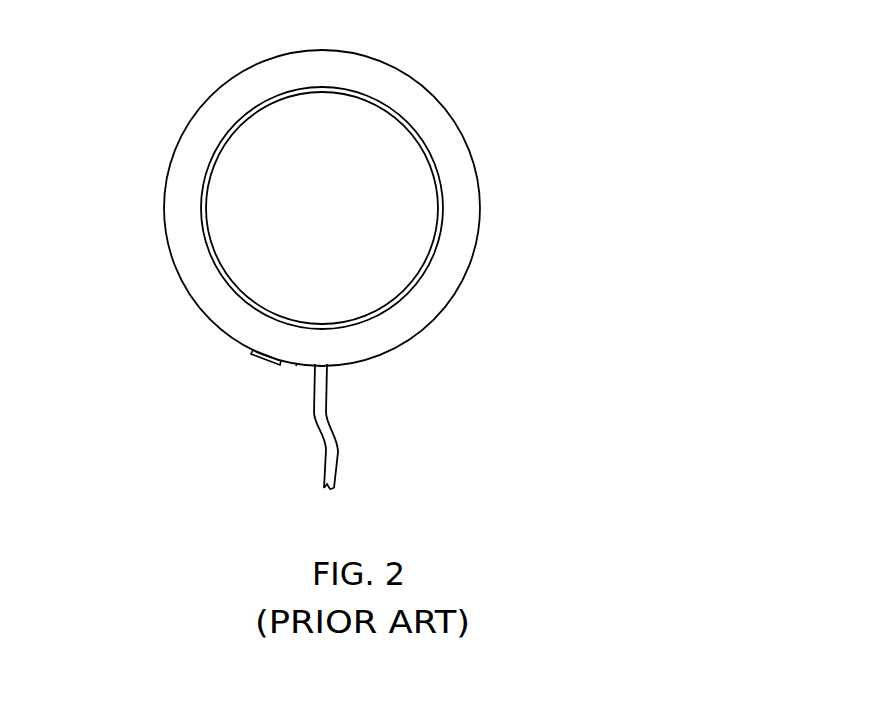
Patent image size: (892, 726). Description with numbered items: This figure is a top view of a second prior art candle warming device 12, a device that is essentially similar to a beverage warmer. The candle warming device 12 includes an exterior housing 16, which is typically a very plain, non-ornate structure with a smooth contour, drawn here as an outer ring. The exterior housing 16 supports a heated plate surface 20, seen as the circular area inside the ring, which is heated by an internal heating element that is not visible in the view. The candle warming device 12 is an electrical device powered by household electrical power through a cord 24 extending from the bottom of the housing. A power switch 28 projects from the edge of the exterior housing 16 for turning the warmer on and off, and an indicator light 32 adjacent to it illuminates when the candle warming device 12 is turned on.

The candle warming device 12 is at (429, 264).
The exterior housing 16 is at (462, 285).
The heated plate surface 20 is at (393, 135).
The cord 24 is at (337, 450).
The power switch 28 is at (252, 358).
The indicator light 32 is at (297, 364).